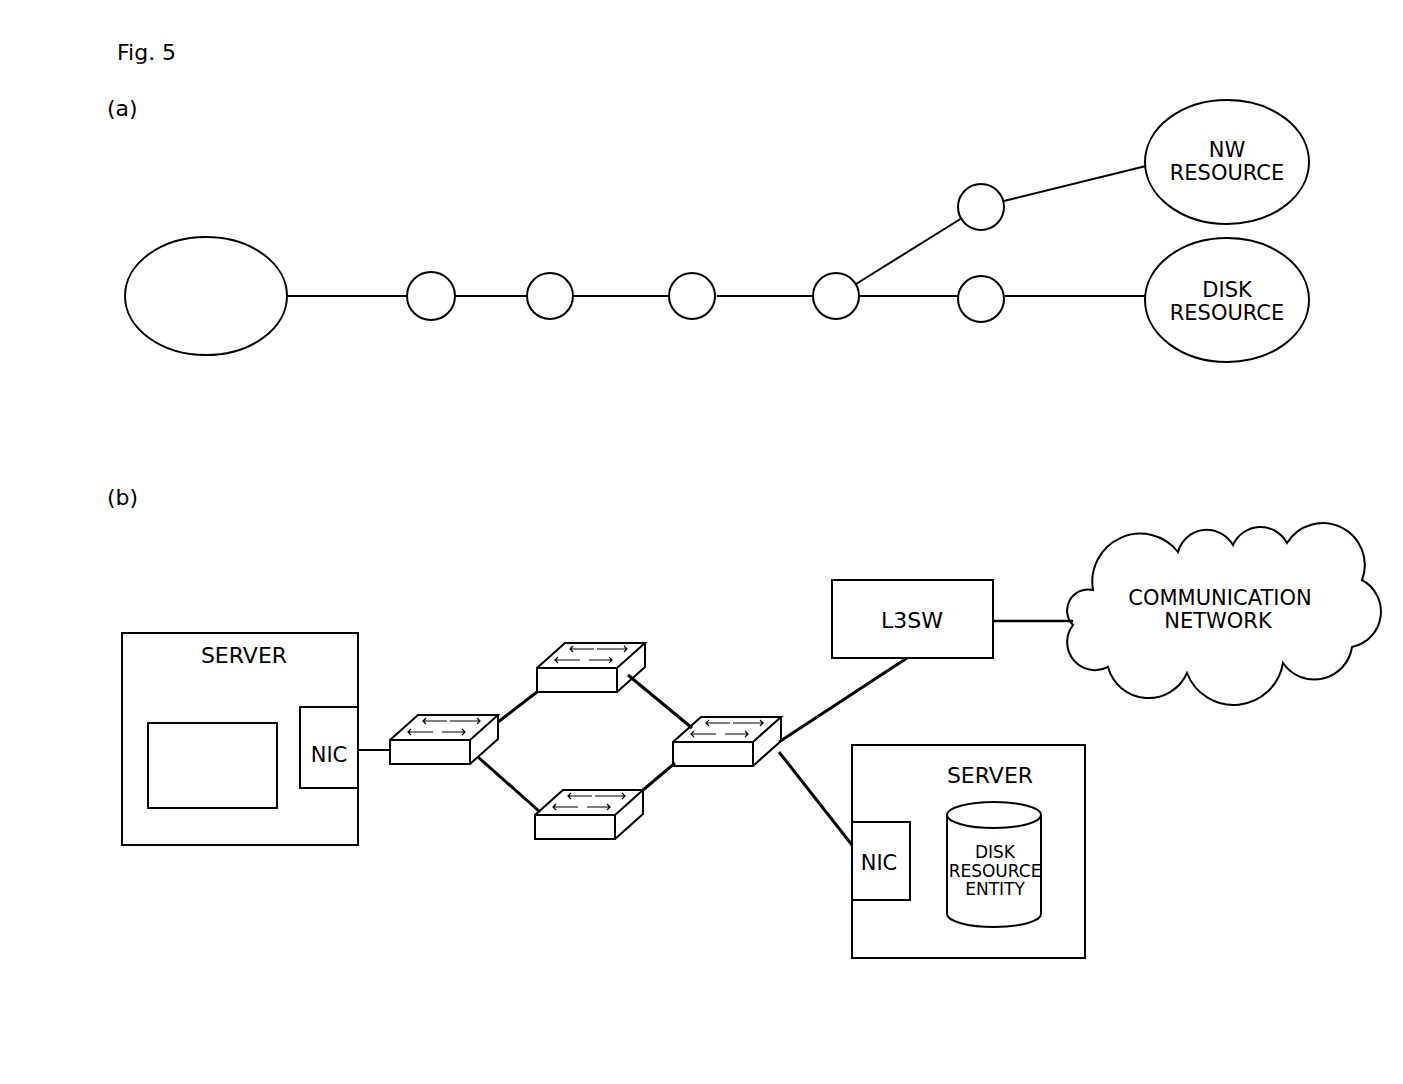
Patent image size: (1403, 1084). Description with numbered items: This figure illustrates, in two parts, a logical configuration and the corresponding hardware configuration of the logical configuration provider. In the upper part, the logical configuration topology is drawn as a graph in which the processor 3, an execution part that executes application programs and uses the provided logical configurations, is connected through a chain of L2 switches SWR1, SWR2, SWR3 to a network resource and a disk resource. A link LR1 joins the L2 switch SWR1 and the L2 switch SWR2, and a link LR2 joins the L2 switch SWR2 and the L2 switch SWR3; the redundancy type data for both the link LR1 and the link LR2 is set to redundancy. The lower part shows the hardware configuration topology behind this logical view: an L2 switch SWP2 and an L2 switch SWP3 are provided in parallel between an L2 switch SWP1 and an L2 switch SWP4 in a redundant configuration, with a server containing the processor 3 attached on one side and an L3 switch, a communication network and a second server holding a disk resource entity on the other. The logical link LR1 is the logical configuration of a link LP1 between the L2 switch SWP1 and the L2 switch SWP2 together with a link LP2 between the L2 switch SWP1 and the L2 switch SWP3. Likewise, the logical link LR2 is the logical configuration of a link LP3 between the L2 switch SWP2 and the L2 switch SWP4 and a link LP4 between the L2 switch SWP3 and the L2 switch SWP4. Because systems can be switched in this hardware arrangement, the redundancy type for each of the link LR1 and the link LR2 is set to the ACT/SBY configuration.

The processor 3 is at (212, 237).
The L2 switch SWR1 is at (550, 272).
The L2 switch SWR2 is at (692, 272).
The L2 switch SWR3 is at (836, 272).
The link LR1 is at (622, 300).
The link LR2 is at (773, 300).
The L2 switch SWP1 is at (445, 713).
The L2 switch SWP2 is at (617, 642).
The L2 switch SWP3 is at (560, 839).
The L2 switch SWP4 is at (680, 766).
The link LP1 is at (503, 712).
The link LP2 is at (505, 785).
The link LP3 is at (657, 697).
The link LP4 is at (660, 780).